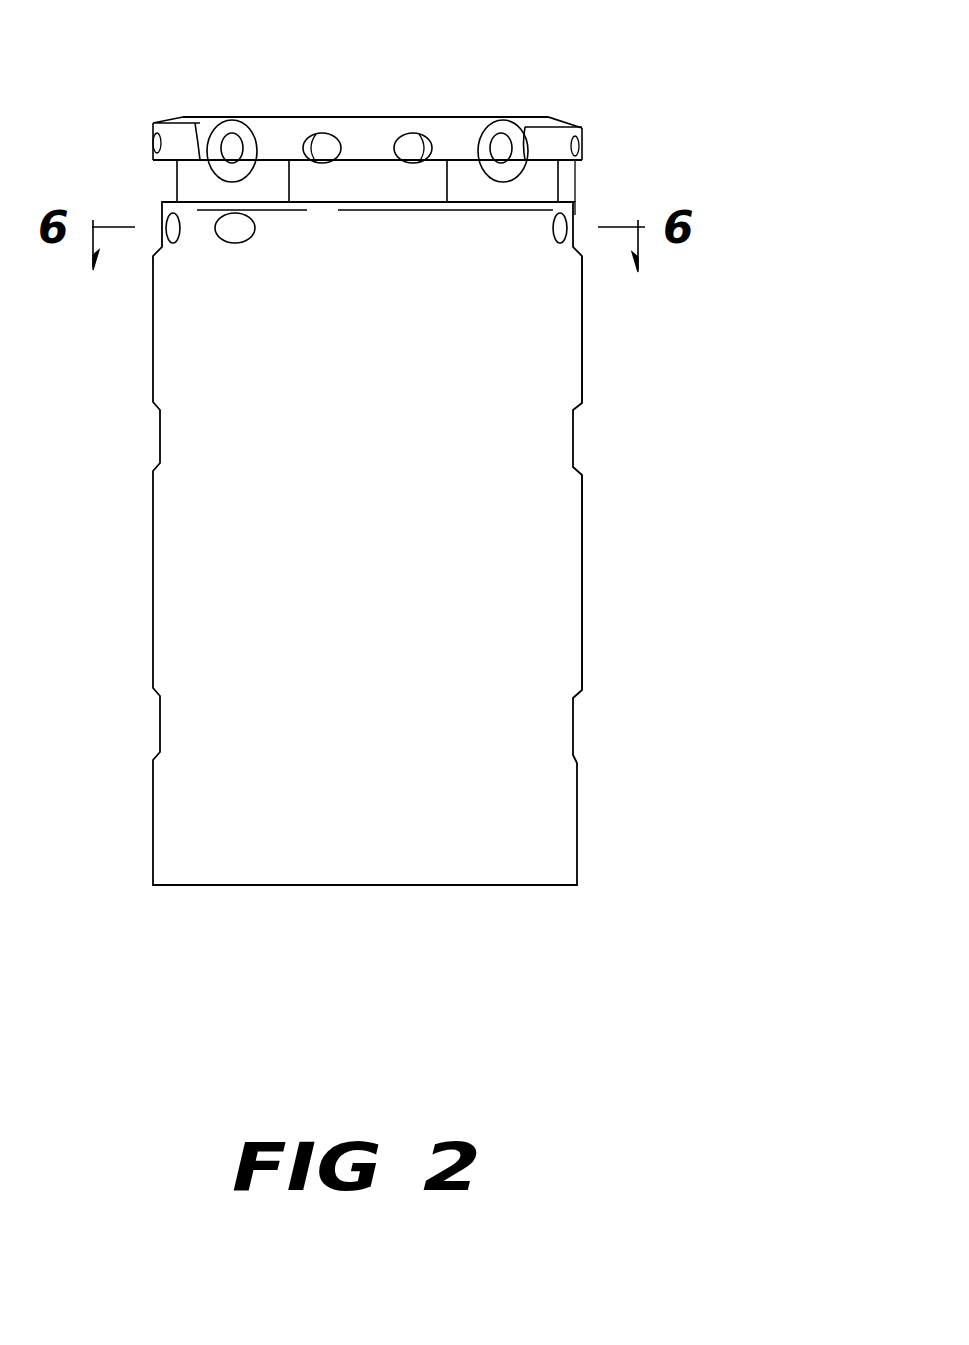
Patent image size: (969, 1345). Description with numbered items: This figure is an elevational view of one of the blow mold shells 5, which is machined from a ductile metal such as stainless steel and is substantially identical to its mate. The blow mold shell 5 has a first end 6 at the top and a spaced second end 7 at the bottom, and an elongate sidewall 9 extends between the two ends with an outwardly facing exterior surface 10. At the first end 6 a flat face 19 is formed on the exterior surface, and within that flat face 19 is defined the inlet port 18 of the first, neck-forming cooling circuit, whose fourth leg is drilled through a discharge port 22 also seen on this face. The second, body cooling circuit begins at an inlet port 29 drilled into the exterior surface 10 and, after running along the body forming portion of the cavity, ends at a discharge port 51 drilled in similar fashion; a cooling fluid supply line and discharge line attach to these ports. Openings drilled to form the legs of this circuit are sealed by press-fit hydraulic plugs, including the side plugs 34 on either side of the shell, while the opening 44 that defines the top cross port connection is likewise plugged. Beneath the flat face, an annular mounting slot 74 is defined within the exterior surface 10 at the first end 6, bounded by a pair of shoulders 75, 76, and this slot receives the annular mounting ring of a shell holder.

The blow mold shell 5 is at (548, 378).
The first end 6 is at (183, 117).
The second end 7 is at (543, 878).
The elongate sidewall 9 is at (582, 550).
The exterior surface 10 is at (290, 551).
The inlet port 18 is at (320, 122).
The flat face 19 is at (375, 130).
The discharge port 22 is at (413, 132).
The inlet port 29 is at (226, 122).
The side plug 34 is at (173, 243).
The opening 44 is at (243, 236).
The discharge port 51 is at (505, 130).
The annular mounting slot 74 is at (575, 186).
The shoulder 75 is at (572, 168).
The shoulder 76 is at (575, 203).